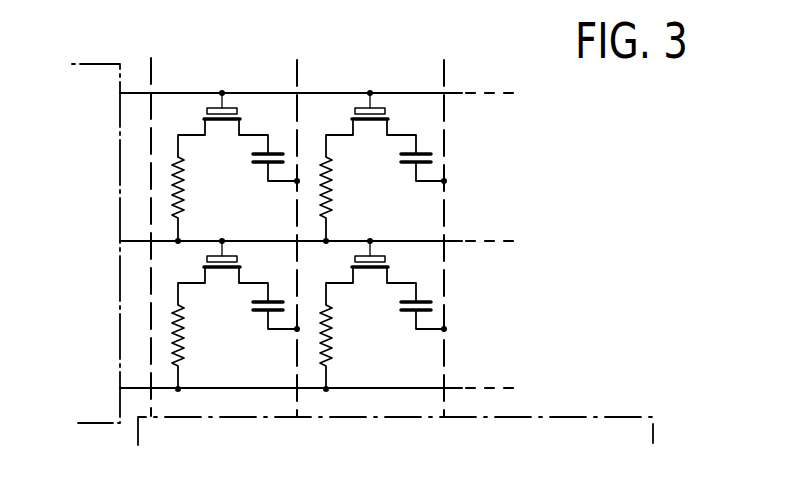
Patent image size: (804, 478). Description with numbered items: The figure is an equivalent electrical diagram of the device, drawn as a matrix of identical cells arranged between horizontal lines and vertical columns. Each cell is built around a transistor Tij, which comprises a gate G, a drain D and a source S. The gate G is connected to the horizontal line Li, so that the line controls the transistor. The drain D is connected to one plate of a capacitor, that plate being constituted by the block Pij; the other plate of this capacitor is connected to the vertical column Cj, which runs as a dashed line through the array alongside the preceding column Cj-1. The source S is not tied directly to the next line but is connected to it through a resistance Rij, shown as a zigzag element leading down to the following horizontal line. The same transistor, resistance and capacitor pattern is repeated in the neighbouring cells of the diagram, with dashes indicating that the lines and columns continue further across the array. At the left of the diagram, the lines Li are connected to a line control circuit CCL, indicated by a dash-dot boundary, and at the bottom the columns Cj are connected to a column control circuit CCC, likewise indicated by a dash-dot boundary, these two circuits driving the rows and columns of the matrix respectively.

The line Li is at (267, 90).
The column Cj-1 is at (150, 72).
The column Cj is at (298, 70).
The transistor Tij is at (221, 85).
The gate G is at (221, 107).
The source S is at (206, 122).
The drain D is at (240, 122).
The resistance Rij is at (177, 189).
The block Pij is at (255, 151).
The line control circuit CCL is at (108, 357).
The column control circuit CCC is at (613, 417).